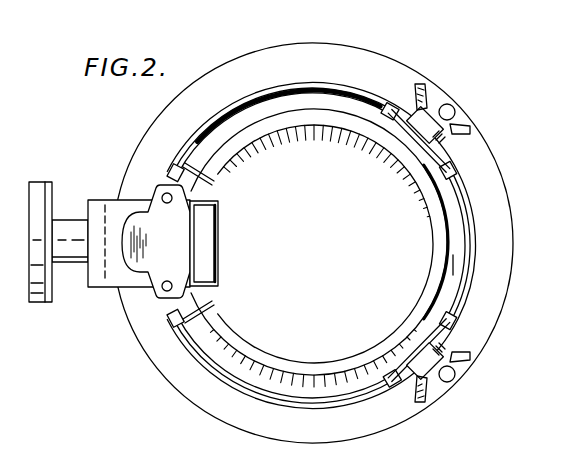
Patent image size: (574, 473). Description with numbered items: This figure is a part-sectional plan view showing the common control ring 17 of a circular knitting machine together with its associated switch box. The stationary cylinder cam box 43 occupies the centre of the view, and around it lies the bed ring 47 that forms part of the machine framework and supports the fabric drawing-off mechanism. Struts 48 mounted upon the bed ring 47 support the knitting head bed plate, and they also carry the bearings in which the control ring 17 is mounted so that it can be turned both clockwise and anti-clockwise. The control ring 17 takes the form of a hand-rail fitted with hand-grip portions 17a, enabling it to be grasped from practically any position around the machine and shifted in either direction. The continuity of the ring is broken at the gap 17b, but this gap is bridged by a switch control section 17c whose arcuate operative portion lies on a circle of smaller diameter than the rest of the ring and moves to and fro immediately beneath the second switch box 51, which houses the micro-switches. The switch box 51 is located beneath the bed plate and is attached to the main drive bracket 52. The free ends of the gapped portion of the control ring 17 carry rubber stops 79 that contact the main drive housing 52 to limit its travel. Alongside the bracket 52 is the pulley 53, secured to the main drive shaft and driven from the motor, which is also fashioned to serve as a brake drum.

The common control ring 17 is at (355, 232).
The hand-grip portions 17a is at (354, 84).
The gap in control ring 17b is at (167, 178).
The switch control section 17c is at (210, 188).
The stationary cylinder cam box 43 is at (444, 248).
The bed ring 47 is at (385, 412).
The struts 48 is at (433, 97).
The second switch box 51 is at (218, 243).
The main drive bracket 52 is at (136, 278).
The pulley 53 is at (38, 193).
The rubber stops 79 is at (176, 166).